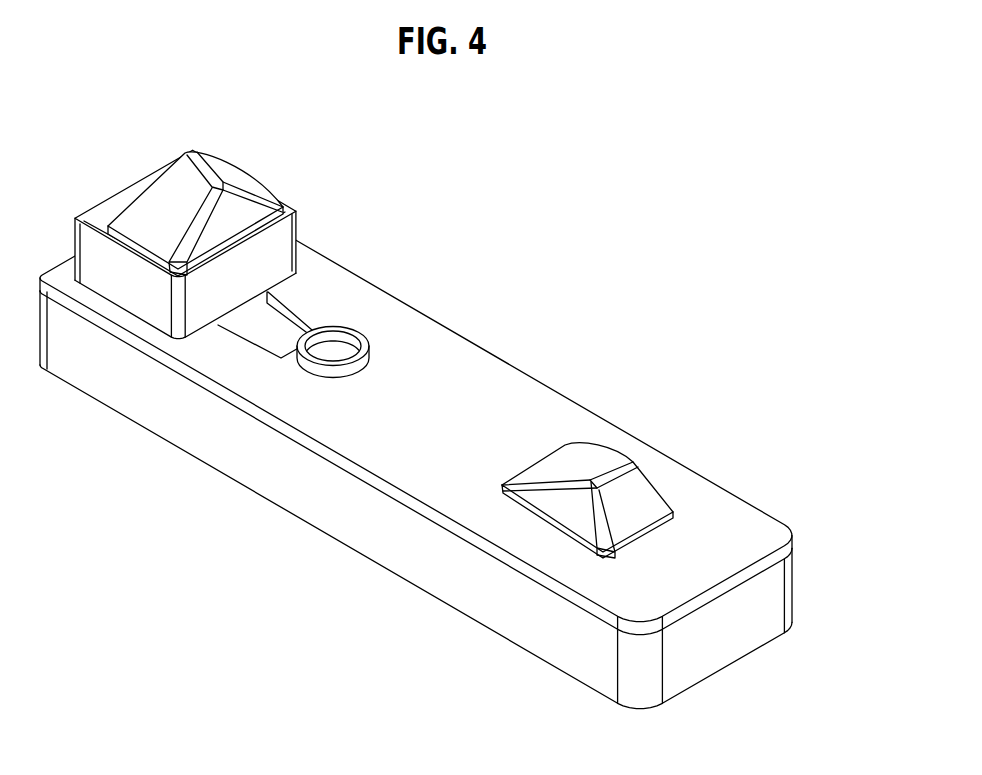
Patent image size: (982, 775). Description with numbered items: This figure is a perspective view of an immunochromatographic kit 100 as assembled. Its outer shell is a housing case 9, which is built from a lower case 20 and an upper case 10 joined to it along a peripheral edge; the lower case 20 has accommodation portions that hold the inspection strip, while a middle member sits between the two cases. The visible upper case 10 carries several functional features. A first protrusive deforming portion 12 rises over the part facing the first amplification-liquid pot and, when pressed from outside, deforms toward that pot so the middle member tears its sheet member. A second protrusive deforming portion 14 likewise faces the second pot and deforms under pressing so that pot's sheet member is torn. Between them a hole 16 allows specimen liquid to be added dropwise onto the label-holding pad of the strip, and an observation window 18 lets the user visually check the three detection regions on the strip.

The immunochromatographic kit 100 is at (444, 411).
The housing case 9 is at (444, 474).
The upper case 10 is at (757, 523).
The lower case 20 is at (775, 598).
The first protrusive deforming portion 12 is at (230, 175).
The second protrusive deforming portion 14 is at (595, 463).
The hole 16 is at (353, 325).
The observation window 18 is at (285, 332).